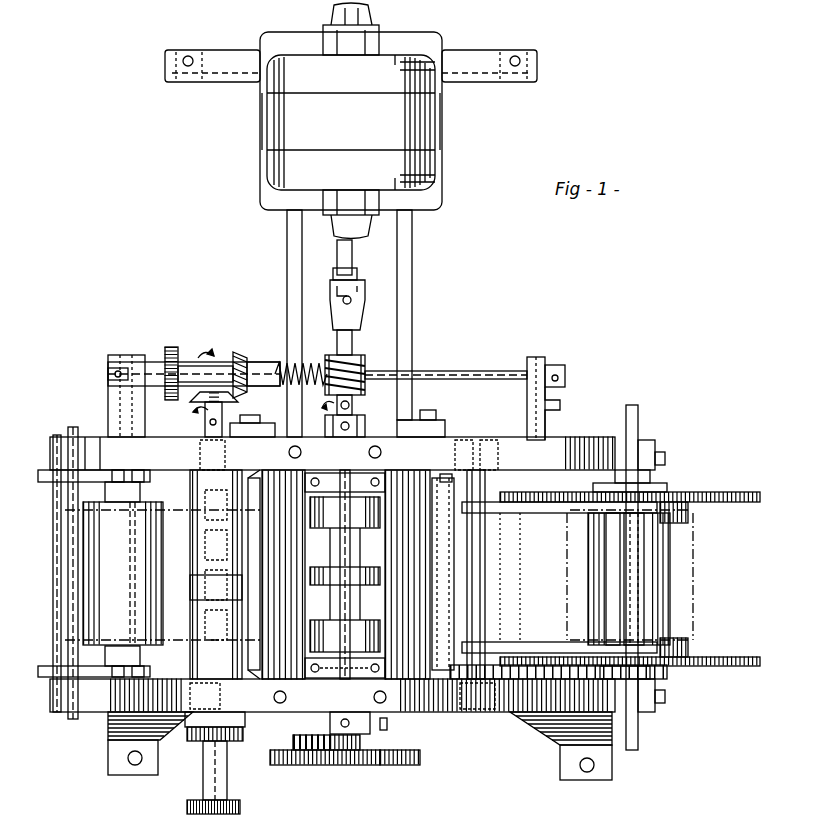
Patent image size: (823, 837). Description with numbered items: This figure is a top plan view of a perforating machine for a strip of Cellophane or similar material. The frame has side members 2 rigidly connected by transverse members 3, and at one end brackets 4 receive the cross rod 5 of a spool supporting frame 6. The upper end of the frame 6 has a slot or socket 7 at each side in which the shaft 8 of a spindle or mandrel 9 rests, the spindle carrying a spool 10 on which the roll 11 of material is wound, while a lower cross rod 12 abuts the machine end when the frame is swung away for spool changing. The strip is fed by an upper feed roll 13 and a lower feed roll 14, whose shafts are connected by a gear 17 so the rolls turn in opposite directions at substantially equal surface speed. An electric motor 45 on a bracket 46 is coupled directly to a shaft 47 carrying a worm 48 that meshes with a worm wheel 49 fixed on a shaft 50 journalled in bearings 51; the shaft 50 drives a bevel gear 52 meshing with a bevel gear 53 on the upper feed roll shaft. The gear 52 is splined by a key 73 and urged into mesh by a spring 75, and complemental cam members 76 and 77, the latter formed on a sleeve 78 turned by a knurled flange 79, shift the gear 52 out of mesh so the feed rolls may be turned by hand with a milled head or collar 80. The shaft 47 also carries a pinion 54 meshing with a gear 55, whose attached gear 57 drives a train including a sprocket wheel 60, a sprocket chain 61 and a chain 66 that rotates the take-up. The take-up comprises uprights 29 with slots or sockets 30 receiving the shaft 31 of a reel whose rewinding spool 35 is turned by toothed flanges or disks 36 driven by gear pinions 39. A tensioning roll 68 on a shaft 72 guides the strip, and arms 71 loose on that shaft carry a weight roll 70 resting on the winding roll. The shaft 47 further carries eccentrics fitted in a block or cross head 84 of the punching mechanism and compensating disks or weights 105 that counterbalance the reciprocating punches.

The side members 2 is at (452, 440).
The transverse members 3 is at (346, 574).
The brackets 4 is at (88, 437).
The cross rod 5 is at (68, 660).
The spool supporting frame 6 is at (45, 470).
The slot or socket 7 is at (126, 484).
The shaft 8 is at (128, 476).
The spindle or mandrel 9 is at (140, 654).
The spool 10 is at (262, 520).
The roll 11 is at (52, 590).
The cross rod 12 is at (52, 493).
The upper feed roll 13 is at (190, 598).
The lower feed roll 14 is at (190, 522).
The gear 17 is at (195, 742).
The uprights 29 is at (655, 445).
The slots or sockets 30 is at (665, 460).
The shaft 31 is at (640, 420).
The rewinding spool 35 is at (672, 590).
The flanges or disks 36 is at (720, 493).
The gear pinions 39 is at (690, 512).
The electric motor 45 is at (351, 121).
The bracket 46 is at (292, 276).
The shaft 47 is at (352, 545).
The worm 48 is at (360, 360).
The worm wheel 49 is at (338, 348).
The shaft 50 is at (455, 366).
The bearings 51 is at (138, 356).
The bevel gear 52 is at (242, 352).
The bevel gear 53 is at (238, 398).
The pinion 54 is at (345, 766).
The gear 55 is at (390, 766).
The gear 57 is at (387, 726).
The sprocket wheel 60 is at (300, 752).
The sprocket chain 61 is at (320, 752).
The chain 66 is at (512, 665).
The tensioning roll 68 is at (486, 568).
The weight roll 70 is at (648, 610).
The arms 71 is at (512, 513).
The shaft 72 is at (478, 485).
The key 73 is at (283, 365).
The spring 75 is at (290, 420).
The cam member 76 is at (150, 362).
The cam member 77 is at (175, 348).
The sleeve 78 is at (215, 365).
The knurled flange 79 is at (210, 338).
The milled head or collar 80 is at (240, 807).
The block or cross head 84 is at (385, 476).
The compensating disks or weights 105 is at (312, 515).